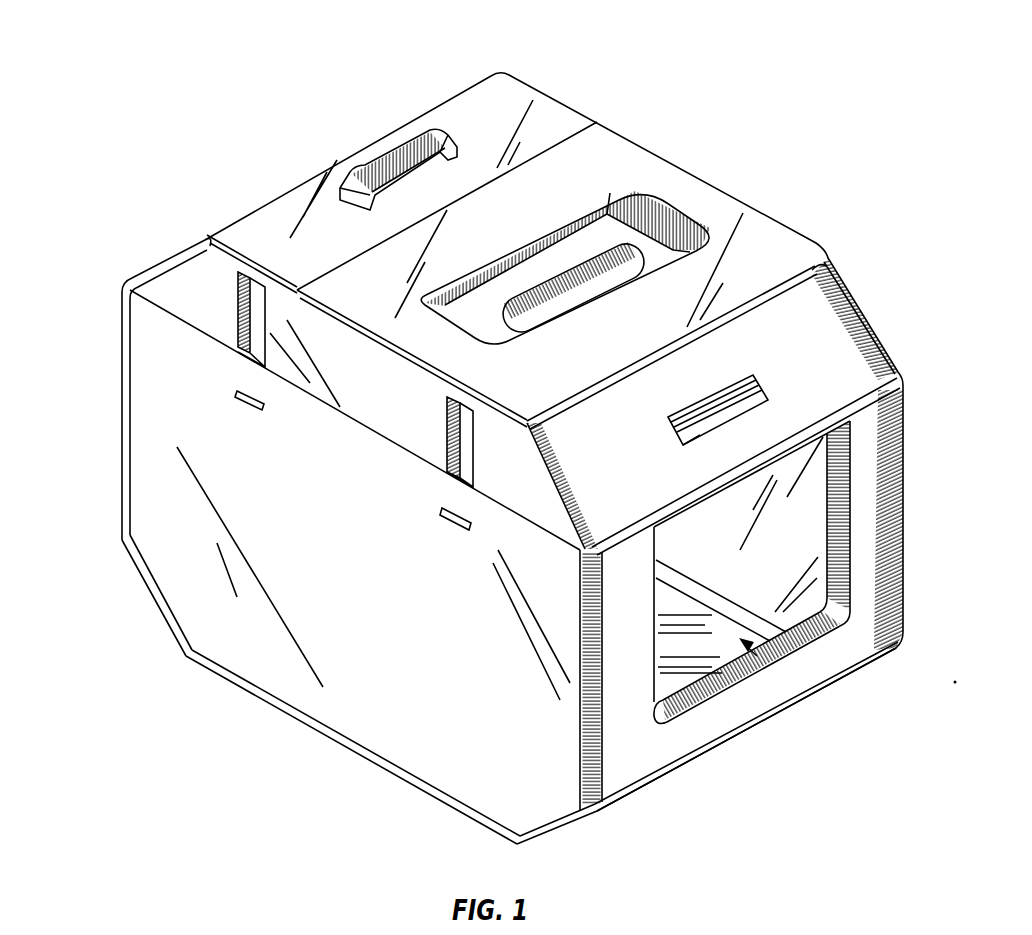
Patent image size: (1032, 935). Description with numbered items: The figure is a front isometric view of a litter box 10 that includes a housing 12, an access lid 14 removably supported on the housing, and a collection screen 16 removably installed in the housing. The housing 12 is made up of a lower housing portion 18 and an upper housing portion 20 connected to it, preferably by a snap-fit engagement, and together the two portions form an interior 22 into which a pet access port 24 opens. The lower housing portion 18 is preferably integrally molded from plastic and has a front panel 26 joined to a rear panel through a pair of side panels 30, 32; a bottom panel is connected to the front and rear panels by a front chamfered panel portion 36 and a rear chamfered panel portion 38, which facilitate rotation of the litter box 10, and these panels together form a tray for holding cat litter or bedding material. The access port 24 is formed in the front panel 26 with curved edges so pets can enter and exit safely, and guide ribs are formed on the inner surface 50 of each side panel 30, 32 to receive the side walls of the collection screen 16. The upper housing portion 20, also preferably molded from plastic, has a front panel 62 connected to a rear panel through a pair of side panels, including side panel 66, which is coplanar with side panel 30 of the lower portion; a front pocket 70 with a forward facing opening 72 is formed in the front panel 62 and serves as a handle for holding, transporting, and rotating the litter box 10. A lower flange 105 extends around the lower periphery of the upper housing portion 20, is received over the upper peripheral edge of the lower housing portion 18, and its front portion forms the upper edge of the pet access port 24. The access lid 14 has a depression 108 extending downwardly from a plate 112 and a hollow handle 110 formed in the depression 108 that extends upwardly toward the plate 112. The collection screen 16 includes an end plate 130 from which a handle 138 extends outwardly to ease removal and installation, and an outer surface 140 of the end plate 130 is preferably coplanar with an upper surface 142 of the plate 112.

The litter box 10 is at (699, 60).
The housing 12 is at (114, 338).
The access lid 14 is at (731, 183).
The collection screen 16 is at (546, 76).
The lower housing portion 18 is at (113, 507).
The upper housing portion 20 is at (148, 248).
The interior 22 is at (800, 616).
The pet access port 24 is at (823, 540).
The front panel 26 is at (640, 765).
The side panel 30 is at (258, 673).
The side panel 32 is at (848, 622).
The front chamfered panel portion 36 is at (567, 832).
The rear chamfered panel portion 38 is at (150, 605).
The inner surface 50 is at (722, 562).
The front panel 62 is at (864, 355).
The side panel 66 is at (384, 418).
The front pocket 70 is at (722, 385).
The forward facing opening 72 is at (700, 436).
The lower flange 105 is at (731, 587).
The depression 108 is at (585, 210).
The hollow handle 110 is at (577, 303).
The plate 112 is at (790, 250).
The end plate 130 is at (447, 105).
The handle 138 is at (386, 160).
The outer surface 140 is at (358, 250).
The upper surface 142 is at (550, 397).